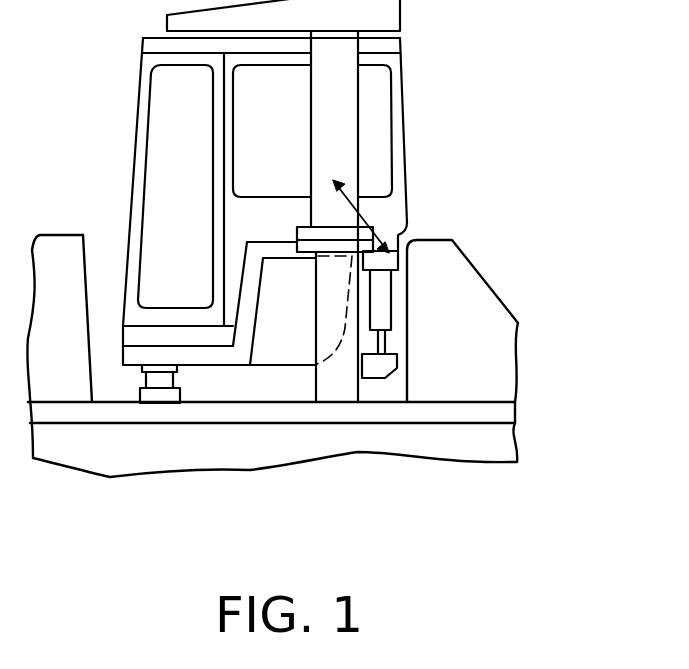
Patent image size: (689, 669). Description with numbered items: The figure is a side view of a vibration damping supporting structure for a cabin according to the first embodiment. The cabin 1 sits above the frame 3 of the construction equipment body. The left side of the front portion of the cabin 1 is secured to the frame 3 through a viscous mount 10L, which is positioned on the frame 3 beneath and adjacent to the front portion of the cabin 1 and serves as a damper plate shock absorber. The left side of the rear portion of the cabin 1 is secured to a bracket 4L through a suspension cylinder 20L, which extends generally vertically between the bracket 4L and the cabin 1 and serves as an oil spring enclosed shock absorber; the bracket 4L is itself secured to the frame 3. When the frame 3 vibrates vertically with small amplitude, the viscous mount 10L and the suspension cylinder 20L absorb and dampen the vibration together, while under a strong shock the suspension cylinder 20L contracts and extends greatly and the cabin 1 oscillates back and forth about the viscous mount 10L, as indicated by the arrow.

The cabin 1 is at (138, 110).
The frame 3 is at (220, 413).
The bracket 4L is at (323, 380).
The viscous mount 10L is at (160, 383).
The suspension cylinder 20L is at (383, 298).